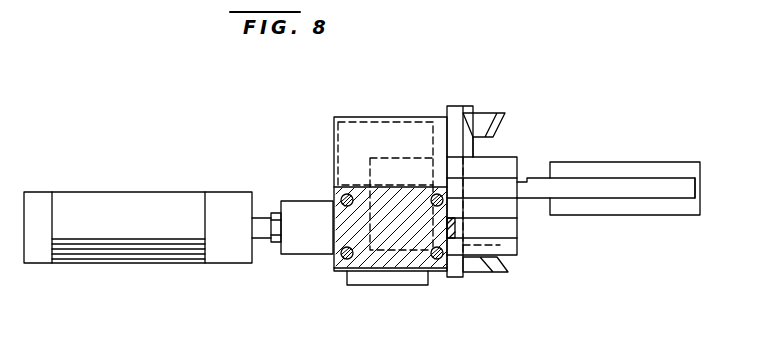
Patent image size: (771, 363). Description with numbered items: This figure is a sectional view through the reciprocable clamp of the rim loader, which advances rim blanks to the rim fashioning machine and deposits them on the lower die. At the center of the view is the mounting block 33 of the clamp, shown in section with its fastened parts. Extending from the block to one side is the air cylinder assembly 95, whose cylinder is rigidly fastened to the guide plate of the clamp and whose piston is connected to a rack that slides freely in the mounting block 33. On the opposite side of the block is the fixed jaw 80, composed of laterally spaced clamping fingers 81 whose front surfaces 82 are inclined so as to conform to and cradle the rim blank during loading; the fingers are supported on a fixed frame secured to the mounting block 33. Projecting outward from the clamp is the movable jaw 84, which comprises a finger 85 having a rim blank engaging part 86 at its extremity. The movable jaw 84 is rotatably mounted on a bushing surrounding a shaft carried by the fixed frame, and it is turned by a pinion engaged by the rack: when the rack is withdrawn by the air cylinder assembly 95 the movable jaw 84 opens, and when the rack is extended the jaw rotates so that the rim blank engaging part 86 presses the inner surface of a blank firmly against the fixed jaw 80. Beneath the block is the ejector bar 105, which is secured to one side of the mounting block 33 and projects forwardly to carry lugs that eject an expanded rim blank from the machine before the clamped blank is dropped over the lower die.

The mounting block 33 is at (334, 168).
The fixed jaw 80 is at (459, 92).
The clamping fingers 81 is at (481, 119).
The front surfaces 82 is at (495, 129).
The movable jaw 84 is at (650, 162).
The finger 85 is at (598, 190).
The rim blank engaging part 86 is at (697, 174).
The air cylinder assembly 95 is at (202, 264).
The ejector bar 105 is at (412, 277).